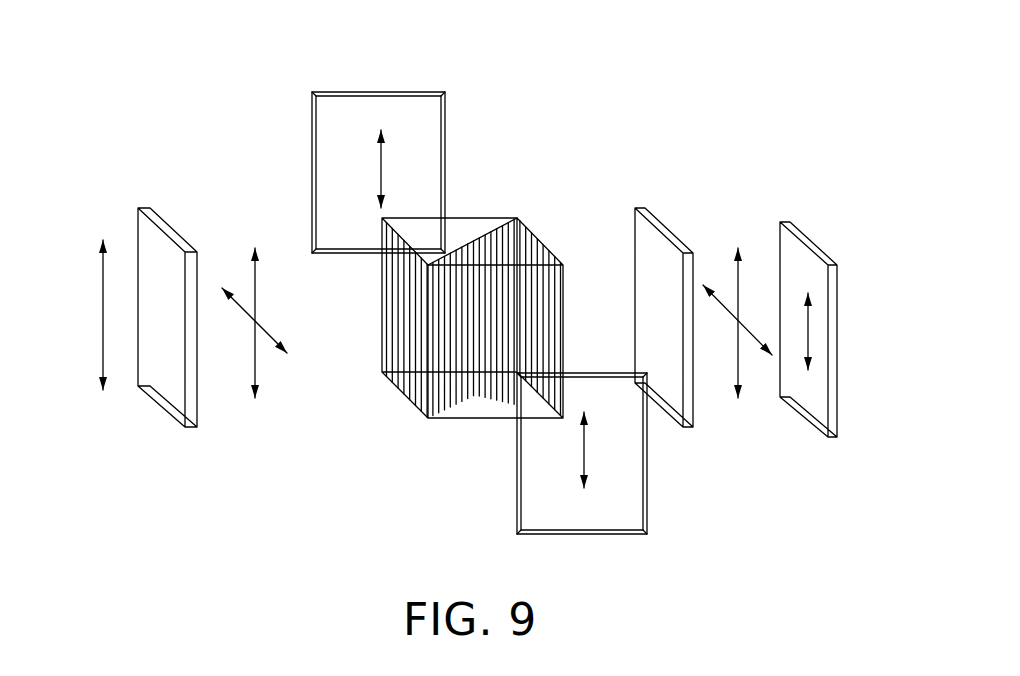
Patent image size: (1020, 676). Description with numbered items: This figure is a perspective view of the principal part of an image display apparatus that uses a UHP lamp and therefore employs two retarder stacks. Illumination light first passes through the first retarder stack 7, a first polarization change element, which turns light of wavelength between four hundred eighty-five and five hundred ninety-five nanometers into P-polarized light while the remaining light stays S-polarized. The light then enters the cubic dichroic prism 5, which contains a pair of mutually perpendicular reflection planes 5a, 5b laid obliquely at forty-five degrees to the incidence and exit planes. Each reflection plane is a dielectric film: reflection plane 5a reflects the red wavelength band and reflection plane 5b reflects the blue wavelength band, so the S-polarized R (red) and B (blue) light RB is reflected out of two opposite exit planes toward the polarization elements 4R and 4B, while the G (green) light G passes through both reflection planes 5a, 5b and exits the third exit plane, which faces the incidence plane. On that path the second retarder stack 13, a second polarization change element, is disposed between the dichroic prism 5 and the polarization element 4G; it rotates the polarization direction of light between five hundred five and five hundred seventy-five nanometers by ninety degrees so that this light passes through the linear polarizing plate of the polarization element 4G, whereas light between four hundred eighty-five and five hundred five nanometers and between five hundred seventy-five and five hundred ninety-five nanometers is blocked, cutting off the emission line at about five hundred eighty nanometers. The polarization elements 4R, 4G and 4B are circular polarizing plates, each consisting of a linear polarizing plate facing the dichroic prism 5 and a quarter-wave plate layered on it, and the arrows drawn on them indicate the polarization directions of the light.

The dichroic prism 5 is at (528, 227).
The reflection plane 5a is at (532, 262).
The reflection plane 5b is at (483, 236).
The first retarder stack 7 is at (190, 433).
The second retarder stack 13 is at (690, 430).
The polarization element 4B is at (312, 146).
The polarization element 4R is at (517, 497).
The polarization element 4G is at (812, 243).
The G (green) light G is at (243, 307).
The R (red) and B (blue) light RB is at (257, 377).